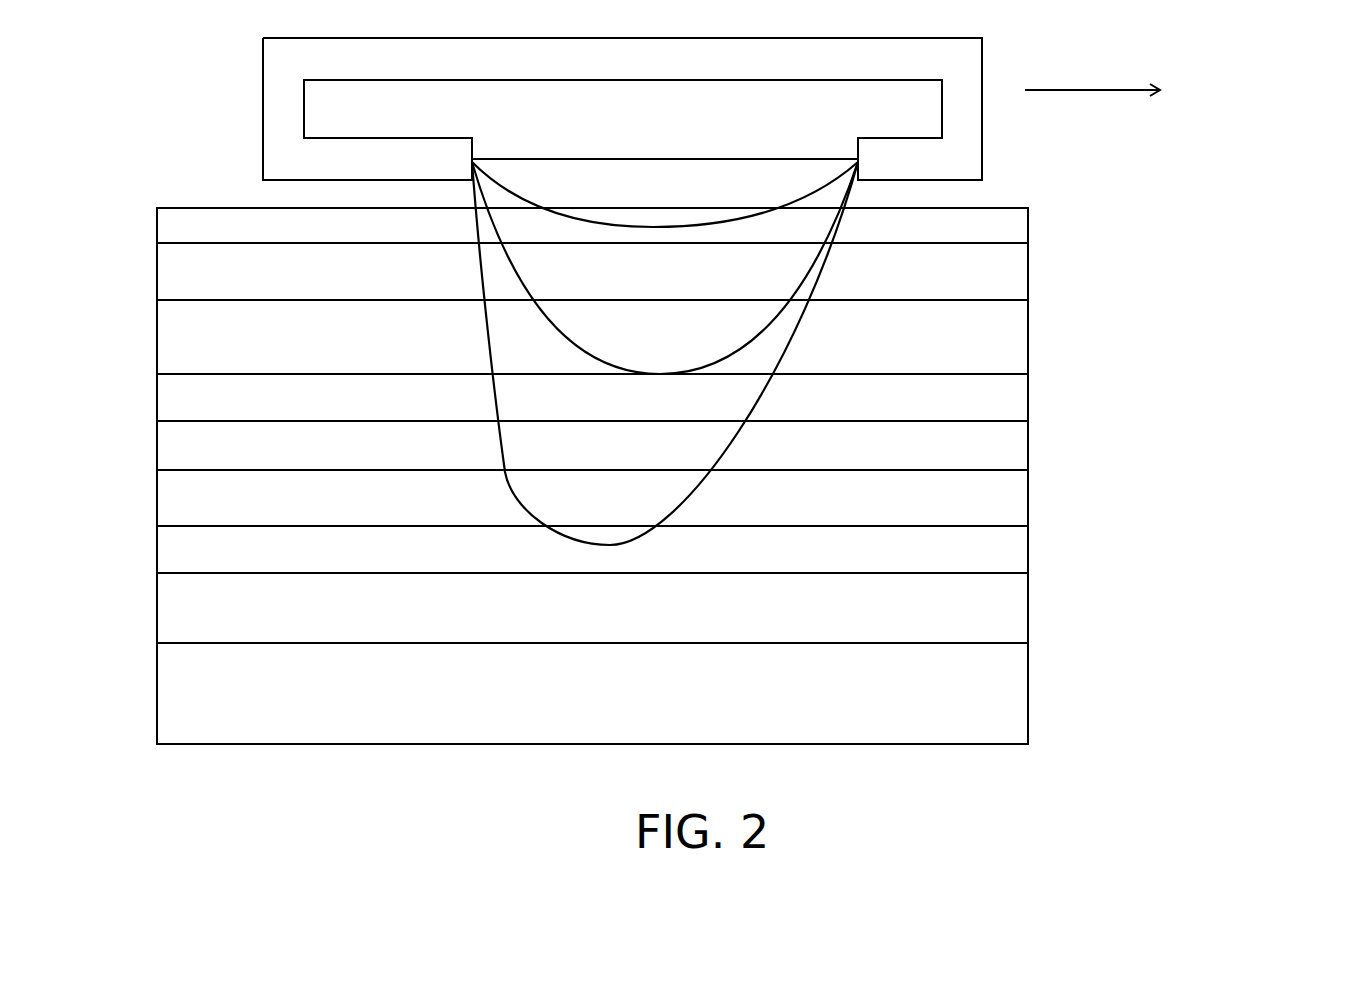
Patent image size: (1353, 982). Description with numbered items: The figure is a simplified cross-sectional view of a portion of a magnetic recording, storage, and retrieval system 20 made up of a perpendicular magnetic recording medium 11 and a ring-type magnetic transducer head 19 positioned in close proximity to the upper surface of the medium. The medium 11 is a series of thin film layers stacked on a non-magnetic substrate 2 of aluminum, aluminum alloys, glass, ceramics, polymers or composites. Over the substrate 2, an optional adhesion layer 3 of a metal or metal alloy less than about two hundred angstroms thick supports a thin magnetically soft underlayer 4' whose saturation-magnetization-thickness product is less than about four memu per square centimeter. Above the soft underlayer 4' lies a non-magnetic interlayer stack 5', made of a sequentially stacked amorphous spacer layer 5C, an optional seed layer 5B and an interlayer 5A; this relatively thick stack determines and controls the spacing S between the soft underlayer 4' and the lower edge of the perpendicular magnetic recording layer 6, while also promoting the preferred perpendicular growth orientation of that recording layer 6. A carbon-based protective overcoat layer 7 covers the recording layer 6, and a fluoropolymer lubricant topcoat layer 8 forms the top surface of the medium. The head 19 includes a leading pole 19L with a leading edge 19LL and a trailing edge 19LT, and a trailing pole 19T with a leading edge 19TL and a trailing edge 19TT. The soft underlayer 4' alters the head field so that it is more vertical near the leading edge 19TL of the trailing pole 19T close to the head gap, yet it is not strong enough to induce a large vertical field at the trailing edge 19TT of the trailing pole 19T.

The non-magnetic substrate 2 is at (1042, 693).
The adhesion layer 3 is at (1042, 608).
The magnetically soft underlayer 4' is at (652, 549).
The interlayer 5A is at (1042, 398).
The seed layer 5B is at (1042, 447).
The amorphous spacer layer 5C is at (1042, 499).
The non-magnetic interlayer stack 5' is at (701, 450).
The perpendicular magnetic recording layer 6 is at (1042, 338).
The protective overcoat layer 7 is at (1042, 271).
The lubricant topcoat layer 8 is at (1042, 225).
The perpendicular magnetic recording medium 11 is at (128, 208).
The ring-type magnetic transducer head 19 is at (250, 38).
The trailing pole 19T is at (324, 135).
The leading edge of trailing pole 19TL is at (475, 127).
The trailing edge of leading pole 19LT is at (857, 127).
The leading pole 19L is at (921, 135).
The trailing edge of trailing pole 19TT is at (262, 184).
The leading edge of leading pole 19LL is at (983, 184).
The magnetic recording, storage, and retrieval system 20 is at (1253, 38).
The spacing S is at (611, 376).